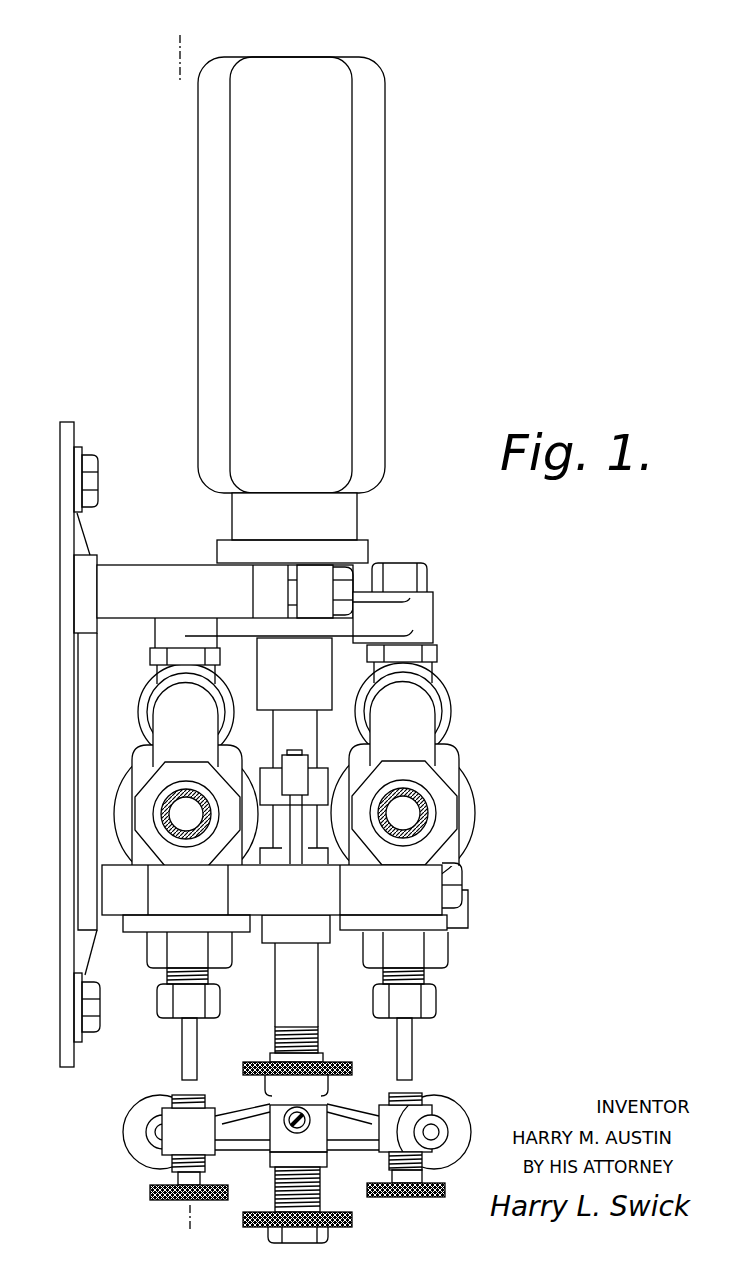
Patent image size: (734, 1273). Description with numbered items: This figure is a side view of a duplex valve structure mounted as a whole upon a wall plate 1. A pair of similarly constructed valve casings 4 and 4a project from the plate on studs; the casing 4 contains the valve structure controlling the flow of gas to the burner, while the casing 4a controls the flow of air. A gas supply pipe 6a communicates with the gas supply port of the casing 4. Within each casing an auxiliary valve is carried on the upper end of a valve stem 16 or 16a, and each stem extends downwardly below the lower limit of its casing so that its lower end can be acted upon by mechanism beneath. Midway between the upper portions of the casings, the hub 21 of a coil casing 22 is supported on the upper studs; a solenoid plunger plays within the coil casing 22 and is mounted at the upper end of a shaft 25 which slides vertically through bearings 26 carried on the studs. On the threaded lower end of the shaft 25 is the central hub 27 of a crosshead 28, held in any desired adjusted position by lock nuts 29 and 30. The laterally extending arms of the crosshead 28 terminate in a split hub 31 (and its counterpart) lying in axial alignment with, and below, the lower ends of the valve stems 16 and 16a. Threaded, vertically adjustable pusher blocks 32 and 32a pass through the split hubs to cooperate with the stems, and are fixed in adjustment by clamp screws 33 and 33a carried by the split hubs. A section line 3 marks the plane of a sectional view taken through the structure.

The wall plate 1 is at (67, 537).
The section line 3 is at (193, 627).
The valve casing 4 is at (119, 789).
The valve casing 4a is at (494, 812).
The gas supply pipe 6a is at (294, 813).
The valve stem 16 is at (188, 1043).
The valve stem 16a is at (407, 1043).
The hub 21 is at (292, 528).
The coil casing 22 is at (291, 275).
The shaft 25 is at (330, 1192).
The bearings 26 is at (294, 790).
The central hub 27 is at (296, 1088).
The crosshead 28 is at (297, 1135).
The lock nut 29 is at (355, 1222).
The lock nut 30 is at (347, 1062).
The split hub 31 is at (297, 1130).
The pusher block 32 is at (198, 1096).
The pusher block 32a is at (415, 1093).
The clamp screw 33 is at (155, 1132).
The clamp screw 33a is at (440, 1129).